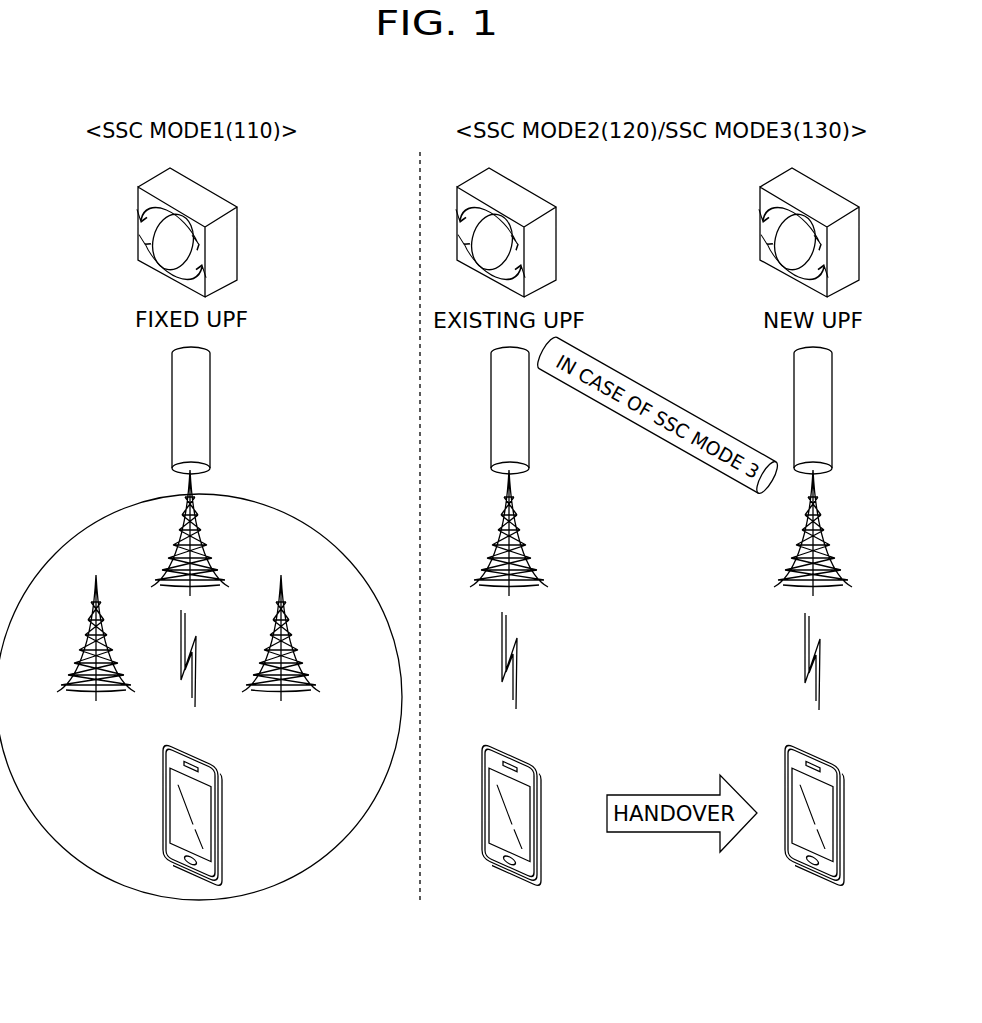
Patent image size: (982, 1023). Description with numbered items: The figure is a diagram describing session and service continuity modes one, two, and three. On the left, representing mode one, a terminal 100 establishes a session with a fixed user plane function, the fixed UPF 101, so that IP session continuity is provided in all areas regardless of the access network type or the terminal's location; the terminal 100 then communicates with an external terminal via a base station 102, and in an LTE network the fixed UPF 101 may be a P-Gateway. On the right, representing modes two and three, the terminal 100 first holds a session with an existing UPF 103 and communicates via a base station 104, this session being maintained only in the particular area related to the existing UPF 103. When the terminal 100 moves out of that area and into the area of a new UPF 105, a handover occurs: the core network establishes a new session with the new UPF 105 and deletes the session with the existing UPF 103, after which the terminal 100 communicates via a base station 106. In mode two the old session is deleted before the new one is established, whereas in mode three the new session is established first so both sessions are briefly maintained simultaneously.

The terminal 100 is at (196, 753).
The fixed user plane function (UPF) 101 is at (205, 187).
The base station 102 is at (205, 545).
The existing UPF 103 is at (524, 188).
The base station 104 is at (523, 542).
The new UPF 105 is at (827, 188).
The base station 106 is at (830, 543).